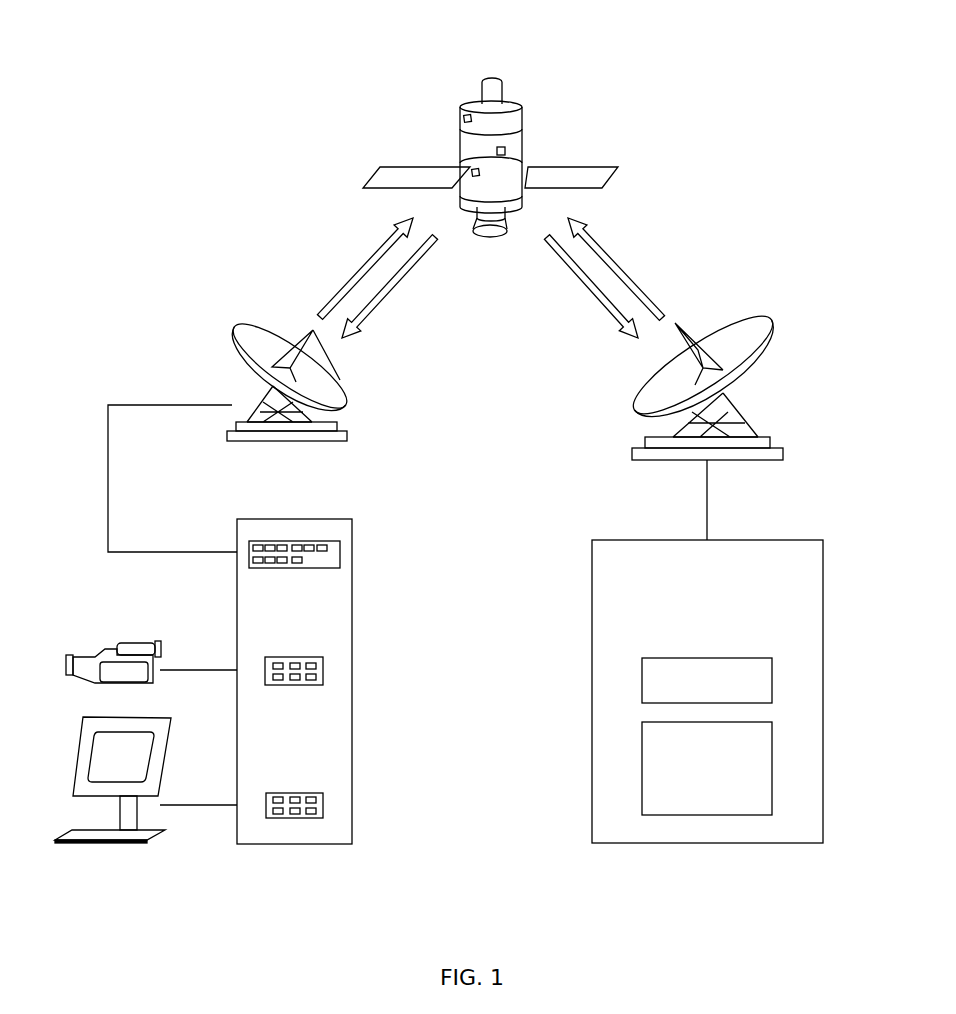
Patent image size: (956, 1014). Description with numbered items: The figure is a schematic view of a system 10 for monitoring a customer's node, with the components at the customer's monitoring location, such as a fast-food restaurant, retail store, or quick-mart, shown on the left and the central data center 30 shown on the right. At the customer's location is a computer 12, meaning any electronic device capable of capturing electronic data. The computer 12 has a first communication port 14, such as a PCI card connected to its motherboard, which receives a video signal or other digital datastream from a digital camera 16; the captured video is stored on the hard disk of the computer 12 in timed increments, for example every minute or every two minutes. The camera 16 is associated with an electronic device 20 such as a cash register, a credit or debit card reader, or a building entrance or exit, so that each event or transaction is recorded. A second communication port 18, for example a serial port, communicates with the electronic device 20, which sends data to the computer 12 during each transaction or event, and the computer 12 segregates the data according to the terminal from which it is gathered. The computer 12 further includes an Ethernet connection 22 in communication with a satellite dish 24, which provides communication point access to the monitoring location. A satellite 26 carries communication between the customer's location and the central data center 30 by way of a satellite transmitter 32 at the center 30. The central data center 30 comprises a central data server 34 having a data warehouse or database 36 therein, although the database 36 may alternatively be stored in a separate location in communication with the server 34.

The system 10 is at (250, 85).
The computer 12 is at (345, 518).
The first communication port 14 is at (323, 672).
The digital camera 16 is at (103, 647).
The second communication port 18 is at (323, 805).
The electronic device 20 is at (100, 845).
The Ethernet connection 22 is at (342, 553).
The satellite dish 24 is at (225, 323).
The satellite 26 is at (545, 92).
The central data center 30 is at (808, 539).
The satellite transmitter 32 is at (773, 389).
The central data server 34 is at (695, 694).
The database 36 is at (695, 780).